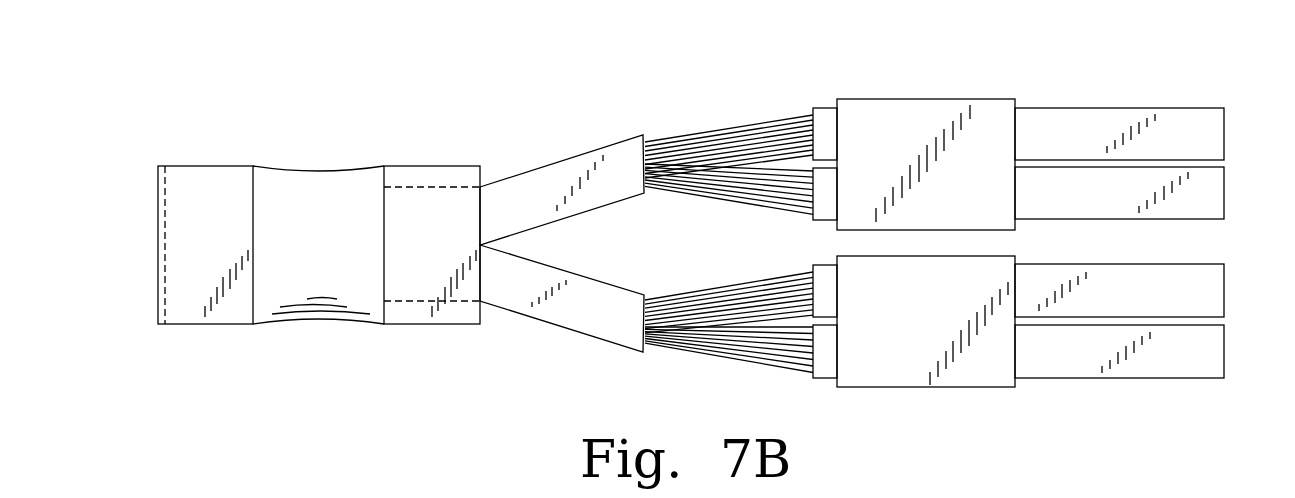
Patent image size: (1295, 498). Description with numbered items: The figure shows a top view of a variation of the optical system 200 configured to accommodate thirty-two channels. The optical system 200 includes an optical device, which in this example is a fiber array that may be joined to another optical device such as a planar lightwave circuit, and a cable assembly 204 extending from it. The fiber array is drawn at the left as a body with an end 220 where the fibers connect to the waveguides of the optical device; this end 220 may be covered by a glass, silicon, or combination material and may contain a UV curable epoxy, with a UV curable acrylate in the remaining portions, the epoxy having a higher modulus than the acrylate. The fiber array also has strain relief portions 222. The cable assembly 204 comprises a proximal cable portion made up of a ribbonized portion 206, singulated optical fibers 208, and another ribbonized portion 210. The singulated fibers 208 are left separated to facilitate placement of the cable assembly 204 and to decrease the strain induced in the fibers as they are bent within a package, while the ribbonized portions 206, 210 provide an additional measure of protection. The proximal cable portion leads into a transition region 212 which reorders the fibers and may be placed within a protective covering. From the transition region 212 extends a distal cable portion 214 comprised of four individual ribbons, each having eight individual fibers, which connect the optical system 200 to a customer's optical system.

The optical system 200 is at (233, 125).
The cable assembly 204 is at (661, 76).
The ribbonized portion 206 is at (537, 163).
The singulated optical fibers 208 is at (728, 125).
The ribbonized portion 210 is at (822, 130).
The transition region 212 is at (890, 112).
The distal cable portion 214 is at (1203, 130).
The end of the fiber array 220 is at (193, 293).
The strain relief portions 222 is at (420, 175).